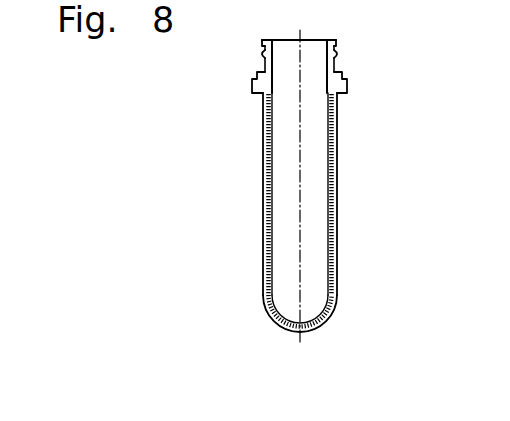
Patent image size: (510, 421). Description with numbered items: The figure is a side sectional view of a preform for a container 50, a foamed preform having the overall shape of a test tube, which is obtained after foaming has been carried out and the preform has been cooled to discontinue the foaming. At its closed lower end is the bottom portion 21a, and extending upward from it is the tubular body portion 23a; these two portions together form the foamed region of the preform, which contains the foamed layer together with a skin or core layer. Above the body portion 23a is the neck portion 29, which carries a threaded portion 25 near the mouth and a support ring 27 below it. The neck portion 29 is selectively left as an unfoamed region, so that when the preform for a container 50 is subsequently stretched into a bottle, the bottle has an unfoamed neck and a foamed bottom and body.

The preform for a container 50 is at (227, 188).
The neck portion 29 is at (407, 15).
The threaded portion 25 is at (337, 47).
The support ring 27 is at (346, 84).
The body portion 23a is at (335, 243).
The bottom portion 21a is at (304, 333).